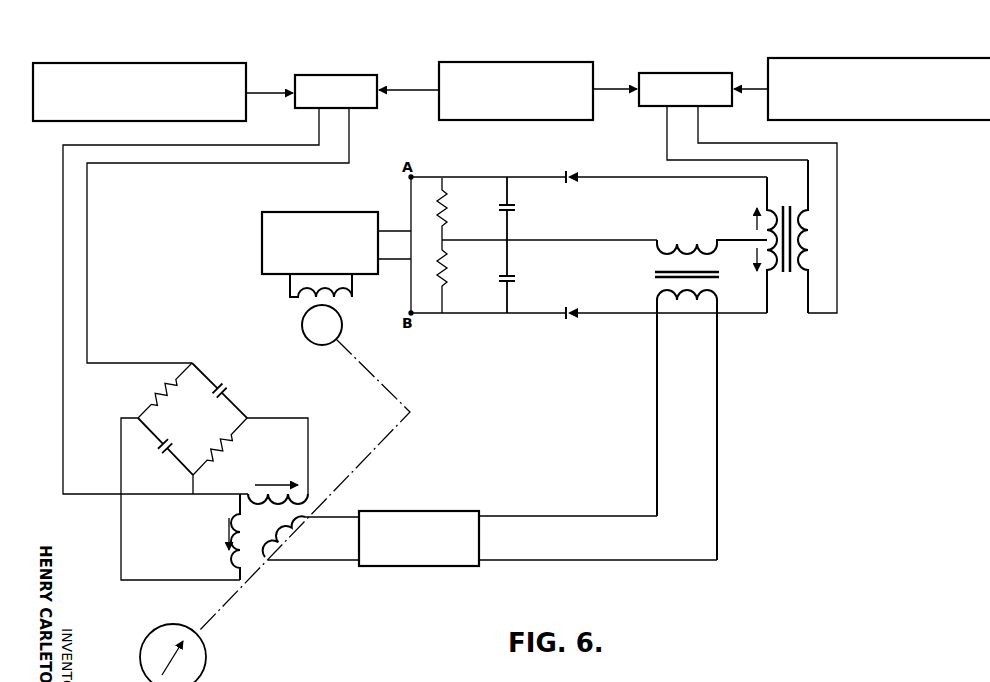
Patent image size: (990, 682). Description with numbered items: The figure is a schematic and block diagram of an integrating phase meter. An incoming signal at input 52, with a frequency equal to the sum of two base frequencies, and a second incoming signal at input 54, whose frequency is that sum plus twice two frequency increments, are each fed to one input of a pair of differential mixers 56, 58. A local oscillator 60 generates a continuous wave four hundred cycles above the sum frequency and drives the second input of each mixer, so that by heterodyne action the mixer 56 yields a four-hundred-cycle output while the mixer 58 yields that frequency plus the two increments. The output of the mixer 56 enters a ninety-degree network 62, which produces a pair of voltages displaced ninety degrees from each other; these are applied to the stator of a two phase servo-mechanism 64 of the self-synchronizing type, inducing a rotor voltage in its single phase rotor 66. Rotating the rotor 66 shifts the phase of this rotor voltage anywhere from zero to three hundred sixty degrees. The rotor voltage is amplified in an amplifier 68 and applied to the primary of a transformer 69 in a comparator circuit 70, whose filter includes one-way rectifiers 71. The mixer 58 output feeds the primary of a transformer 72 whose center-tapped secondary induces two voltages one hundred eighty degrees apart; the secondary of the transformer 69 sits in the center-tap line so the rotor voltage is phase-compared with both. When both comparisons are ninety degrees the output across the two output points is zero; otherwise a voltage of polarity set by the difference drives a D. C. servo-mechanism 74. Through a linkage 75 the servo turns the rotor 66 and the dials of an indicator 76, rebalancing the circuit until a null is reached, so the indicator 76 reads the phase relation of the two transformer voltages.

The input 52 is at (172, 63).
The input 54 is at (945, 58).
The differential mixer 56 is at (346, 75).
The differential mixer 58 is at (684, 73).
The local oscillator 60 is at (515, 62).
The 90° network 62 is at (213, 372).
The two phase servo-mechanism 64 is at (273, 572).
The single phase rotor 66 is at (306, 510).
The amplifier 68 is at (445, 511).
The transformer 69 is at (649, 274).
The comparator circuit 70 is at (646, 218).
The one-way rectifiers 71 is at (570, 171).
The transformer 72 is at (788, 278).
The D. C. servo-mechanism 74 is at (325, 212).
The linkage 75 is at (401, 402).
The indicator 76 is at (206, 653).